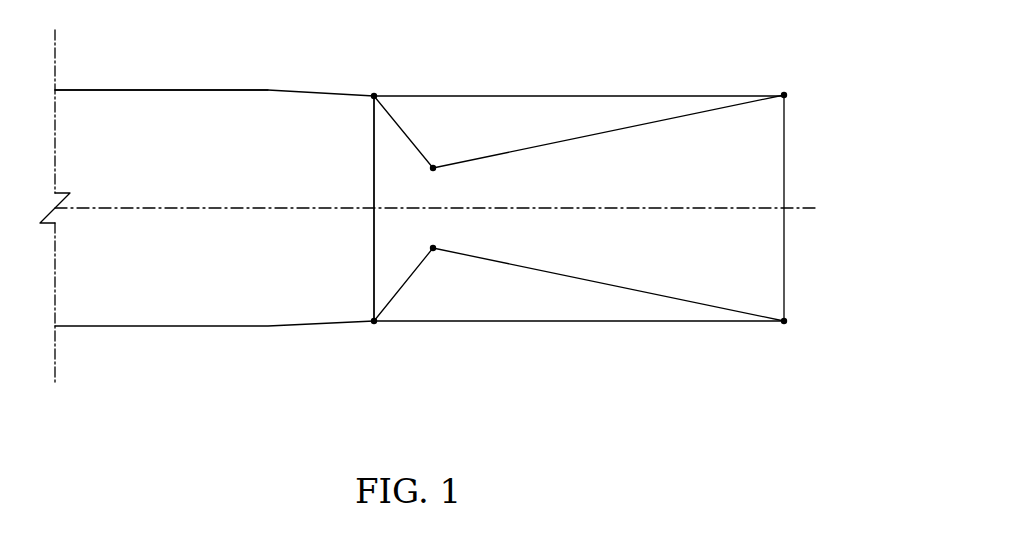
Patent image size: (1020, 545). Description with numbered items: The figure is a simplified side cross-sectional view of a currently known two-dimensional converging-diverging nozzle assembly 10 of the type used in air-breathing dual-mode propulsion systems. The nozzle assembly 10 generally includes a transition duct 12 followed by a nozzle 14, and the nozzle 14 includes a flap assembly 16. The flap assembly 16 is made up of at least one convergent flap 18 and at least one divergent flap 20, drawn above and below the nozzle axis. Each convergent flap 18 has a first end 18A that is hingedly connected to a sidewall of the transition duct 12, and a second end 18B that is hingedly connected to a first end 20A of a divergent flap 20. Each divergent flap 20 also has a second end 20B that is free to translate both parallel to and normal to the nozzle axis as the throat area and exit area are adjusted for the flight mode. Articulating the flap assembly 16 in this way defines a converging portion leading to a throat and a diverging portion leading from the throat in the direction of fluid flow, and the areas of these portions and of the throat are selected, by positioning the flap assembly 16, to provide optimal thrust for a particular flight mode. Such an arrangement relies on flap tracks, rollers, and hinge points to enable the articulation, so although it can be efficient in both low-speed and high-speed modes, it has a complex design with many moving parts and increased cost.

The two-dimensional converging-diverging nozzle assembly 10 is at (787, 66).
The transition duct 12 is at (160, 90).
The nozzle 14 is at (750, 130).
The flap assembly 16 is at (382, 238).
The convergent flap 18 is at (396, 106).
The first end of convergent flap 18A is at (374, 93).
The second end of convergent flap 18B is at (420, 147).
The divergent flap 20 is at (648, 110).
The first end of divergent flap 20A is at (460, 161).
The second end of divergent flap 20B is at (747, 94).